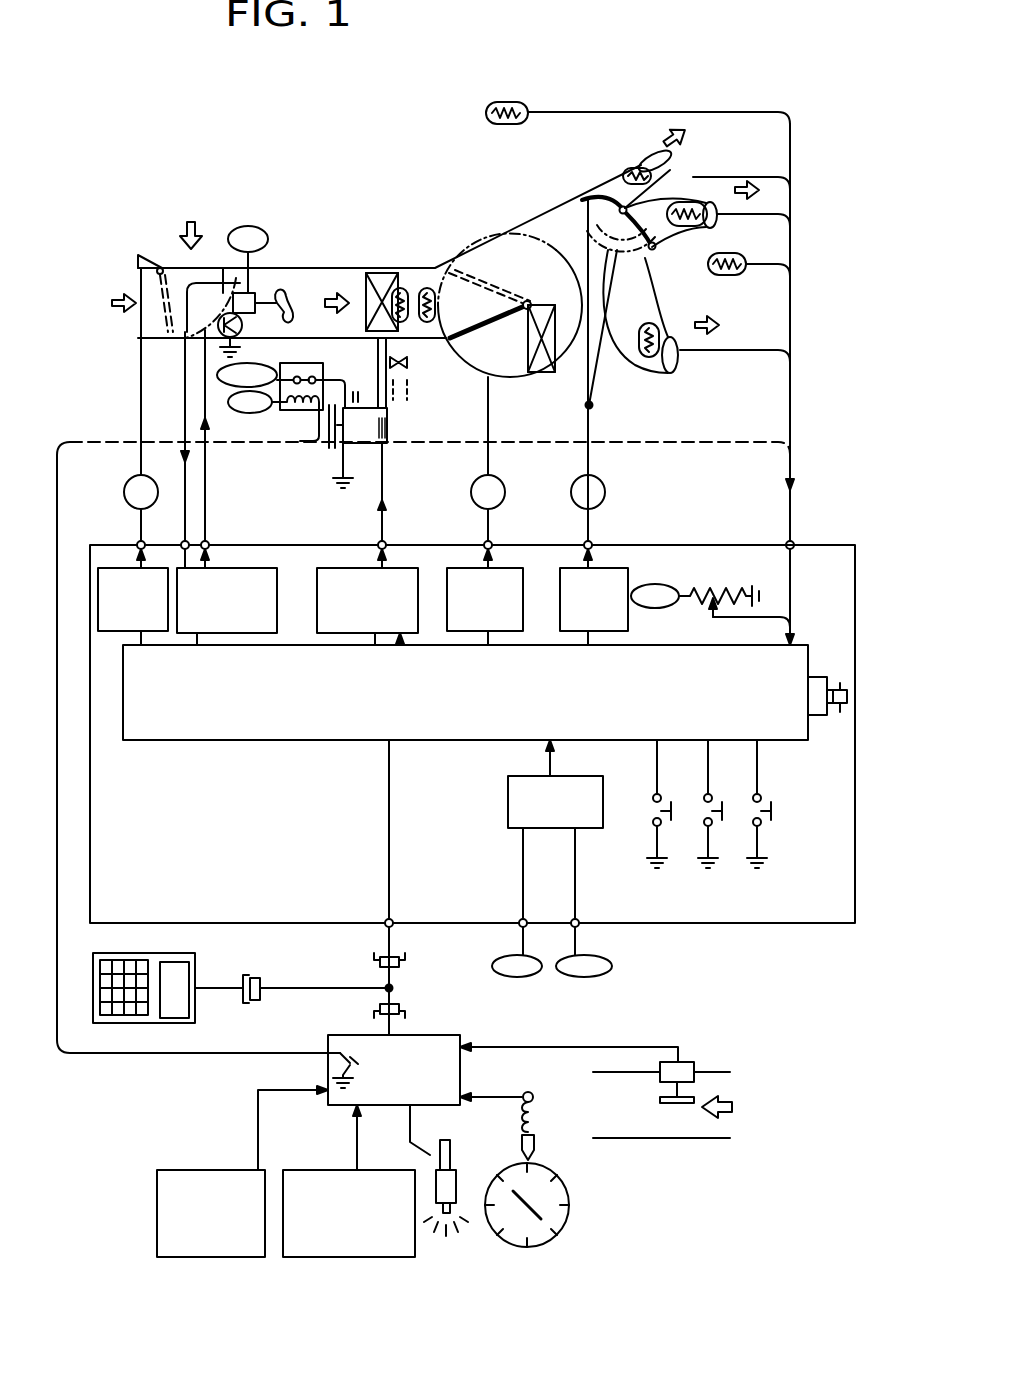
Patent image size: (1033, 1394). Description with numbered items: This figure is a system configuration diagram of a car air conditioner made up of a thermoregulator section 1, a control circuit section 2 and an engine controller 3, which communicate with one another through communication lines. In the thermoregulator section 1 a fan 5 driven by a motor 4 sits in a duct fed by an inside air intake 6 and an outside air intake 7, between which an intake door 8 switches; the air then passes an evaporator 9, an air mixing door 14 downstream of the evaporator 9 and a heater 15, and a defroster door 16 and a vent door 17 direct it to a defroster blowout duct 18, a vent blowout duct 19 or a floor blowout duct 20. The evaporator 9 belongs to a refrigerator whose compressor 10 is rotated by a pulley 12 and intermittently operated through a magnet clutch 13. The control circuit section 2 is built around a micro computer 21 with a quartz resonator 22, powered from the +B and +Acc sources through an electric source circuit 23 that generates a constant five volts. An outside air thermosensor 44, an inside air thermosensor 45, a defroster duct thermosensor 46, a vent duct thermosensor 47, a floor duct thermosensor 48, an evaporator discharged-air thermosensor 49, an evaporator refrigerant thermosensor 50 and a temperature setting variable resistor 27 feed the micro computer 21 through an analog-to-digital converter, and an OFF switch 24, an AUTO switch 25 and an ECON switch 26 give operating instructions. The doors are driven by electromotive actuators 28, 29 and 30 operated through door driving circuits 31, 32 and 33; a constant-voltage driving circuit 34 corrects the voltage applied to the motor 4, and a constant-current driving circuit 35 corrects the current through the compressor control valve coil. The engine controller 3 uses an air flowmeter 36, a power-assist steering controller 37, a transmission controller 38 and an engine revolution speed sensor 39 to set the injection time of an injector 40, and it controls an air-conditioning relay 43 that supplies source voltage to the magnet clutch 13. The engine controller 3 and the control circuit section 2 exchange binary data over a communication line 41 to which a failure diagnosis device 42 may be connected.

The thermoregulator section 1 is at (310, 264).
The control circuit section 2 is at (800, 543).
The engine controller 3 is at (441, 1034).
The motor 4 is at (255, 293).
The fan 5 is at (292, 296).
The inside air intake 6 is at (116, 313).
The outside air intake 7 is at (193, 220).
The intake door 8 is at (164, 267).
The evaporator 9 is at (348, 292).
The compressor 10 is at (372, 444).
The pulley 12 is at (322, 455).
The magnet clutch 13 is at (333, 482).
The air mixing door 14 is at (503, 296).
The heater 15 is at (545, 305).
The defroster door 16 is at (589, 199).
The vent door 17 is at (660, 254).
The defroster blowout duct 18 is at (690, 135).
The vent blowout duct 19 is at (752, 184).
The floor blowout duct 20 is at (720, 326).
The micro computer 21 is at (250, 742).
The quartz resonator 22 is at (828, 676).
The electric source circuit 23 is at (507, 795).
The OFF switch 24 is at (652, 795).
The AUTO switch 25 is at (703, 795).
The ECON switch 26 is at (762, 795).
The temperature setting variable resistor 27 is at (706, 604).
The electromotive actuator 28 is at (125, 490).
The electromotive actuator 29 is at (470, 490).
The electromotive actuator 30 is at (606, 490).
The door driving circuit 31 is at (110, 568).
The door driving circuit 32 is at (505, 568).
The door driving circuit 33 is at (615, 568).
The constant-voltage driving circuit 34 is at (237, 568).
The constant-current driving circuit 35 is at (403, 568).
The air flowmeter 36 is at (692, 1061).
The power-assist steering controller 37 is at (298, 1259).
The transmission controller 38 is at (185, 1259).
The engine revolution speed sensor 39 is at (569, 1196).
The injector 40 is at (430, 1224).
The communication line 41 is at (322, 987).
The failure diagnosis device 42 is at (197, 964).
The air-conditioning relay 43 is at (306, 424).
The outside air thermosensor 44 is at (510, 101).
The inside air thermosensor 45 is at (738, 256).
The defroster duct thermosensor 46 is at (632, 166).
The vent duct thermosensor 47 is at (690, 201).
The floor duct thermosensor 48 is at (654, 372).
The evaporator discharged-air thermosensor 49 is at (432, 290).
The evaporator refrigerant thermosensor 50 is at (404, 288).